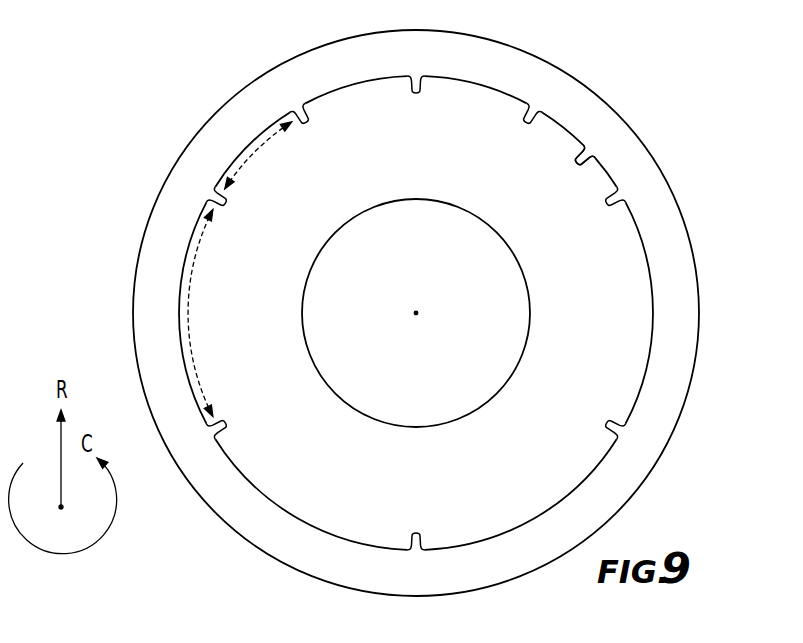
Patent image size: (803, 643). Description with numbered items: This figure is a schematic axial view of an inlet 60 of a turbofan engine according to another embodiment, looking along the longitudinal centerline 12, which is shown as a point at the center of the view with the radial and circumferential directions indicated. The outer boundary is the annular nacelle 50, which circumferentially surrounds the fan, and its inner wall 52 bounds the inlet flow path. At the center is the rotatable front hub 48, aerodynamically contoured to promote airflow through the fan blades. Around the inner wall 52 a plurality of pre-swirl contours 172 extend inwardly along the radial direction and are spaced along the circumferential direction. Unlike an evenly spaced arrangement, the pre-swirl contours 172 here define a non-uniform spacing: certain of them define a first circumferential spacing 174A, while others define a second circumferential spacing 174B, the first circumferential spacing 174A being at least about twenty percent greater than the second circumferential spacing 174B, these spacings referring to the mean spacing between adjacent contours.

The longitudinal centerline 12 is at (416, 309).
The front hub 48 is at (522, 266).
The nacelle 50 is at (595, 112).
The inner wall 52 is at (583, 150).
The inlet 60 is at (470, 117).
The pre-swirl contours 172 is at (613, 202).
The first circumferential spacing 174A is at (188, 310).
The second circumferential spacing 174B is at (253, 153).